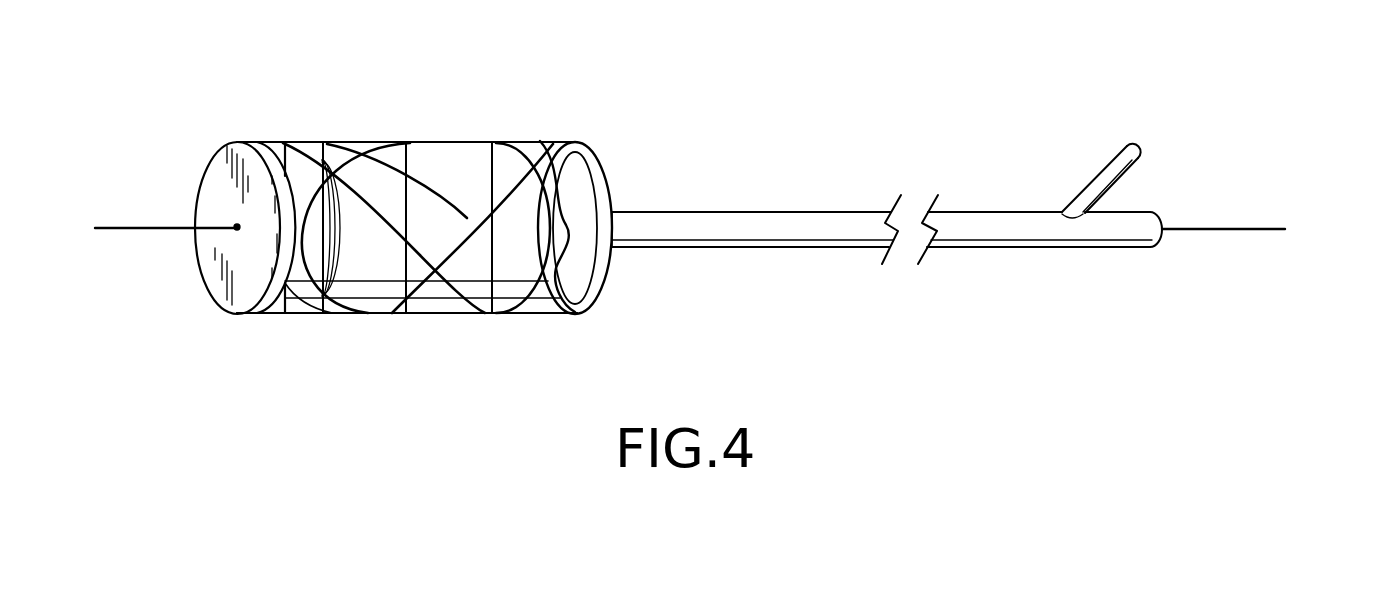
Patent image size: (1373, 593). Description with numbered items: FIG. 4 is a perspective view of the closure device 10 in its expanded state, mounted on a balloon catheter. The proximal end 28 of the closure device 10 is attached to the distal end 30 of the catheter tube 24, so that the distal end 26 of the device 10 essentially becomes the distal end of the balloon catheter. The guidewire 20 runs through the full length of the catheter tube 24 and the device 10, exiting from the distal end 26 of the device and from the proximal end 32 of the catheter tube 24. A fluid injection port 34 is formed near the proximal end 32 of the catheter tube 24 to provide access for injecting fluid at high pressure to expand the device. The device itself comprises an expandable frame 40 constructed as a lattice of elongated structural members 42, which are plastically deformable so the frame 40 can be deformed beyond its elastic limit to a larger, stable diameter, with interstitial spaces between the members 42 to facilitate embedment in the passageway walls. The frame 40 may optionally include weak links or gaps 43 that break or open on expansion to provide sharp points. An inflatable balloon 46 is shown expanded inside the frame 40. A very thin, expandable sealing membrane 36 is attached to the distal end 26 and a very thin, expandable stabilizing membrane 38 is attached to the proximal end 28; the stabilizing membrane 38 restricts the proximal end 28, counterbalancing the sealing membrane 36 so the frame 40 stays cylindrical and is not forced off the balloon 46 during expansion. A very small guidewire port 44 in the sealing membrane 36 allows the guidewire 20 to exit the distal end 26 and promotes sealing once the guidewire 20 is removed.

The closure device 10 is at (383, 320).
The guidewire 20 is at (165, 222).
The catheter tube 24 is at (829, 233).
The distal end 26 is at (256, 318).
The proximal end 28 is at (590, 308).
The distal end 30 is at (620, 225).
The proximal end 32 is at (1150, 250).
The fluid injection port 34 is at (1098, 177).
The sealing membrane 36 is at (262, 145).
The stabilizing membrane 38 is at (587, 155).
The expandable frame 40 is at (455, 265).
The elongated structural members 42 is at (418, 156).
The weak links or gaps 43 is at (475, 228).
The guidewire port 44 is at (237, 228).
The inflatable balloon 46 is at (364, 165).